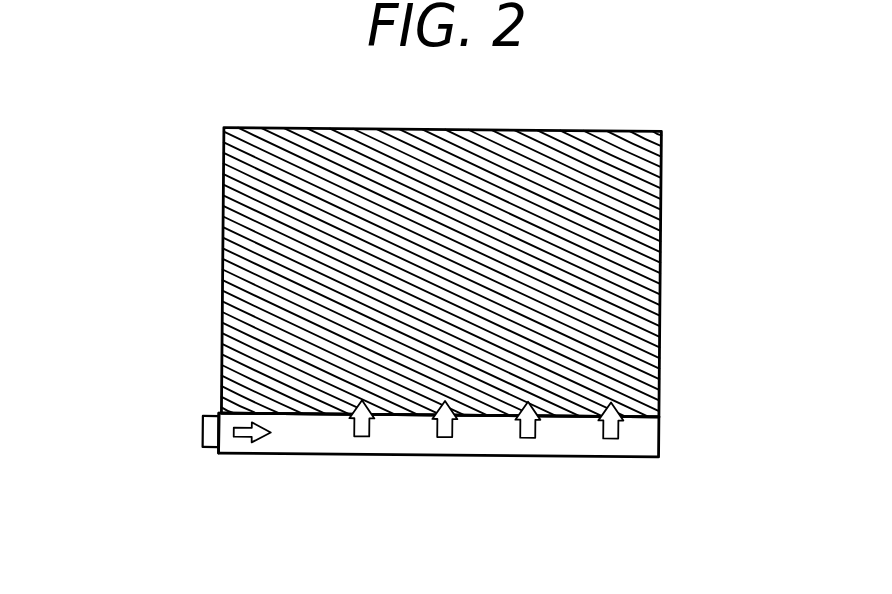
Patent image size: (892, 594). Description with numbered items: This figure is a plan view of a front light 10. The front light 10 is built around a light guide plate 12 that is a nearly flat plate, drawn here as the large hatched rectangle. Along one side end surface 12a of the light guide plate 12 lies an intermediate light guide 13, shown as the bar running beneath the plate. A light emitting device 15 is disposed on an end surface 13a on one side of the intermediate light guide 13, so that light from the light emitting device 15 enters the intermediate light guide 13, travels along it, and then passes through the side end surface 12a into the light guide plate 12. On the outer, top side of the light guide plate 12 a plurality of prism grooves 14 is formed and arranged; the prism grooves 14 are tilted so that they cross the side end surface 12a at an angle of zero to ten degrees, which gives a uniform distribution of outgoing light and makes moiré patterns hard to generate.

The front light 10 is at (650, 116).
The light guide plate 12 is at (486, 238).
The side end surface 12a is at (404, 414).
The intermediate light guide 13 is at (423, 461).
The end surface 13a is at (219, 433).
The prism grooves 14 is at (628, 328).
The light emitting device 15 is at (203, 430).